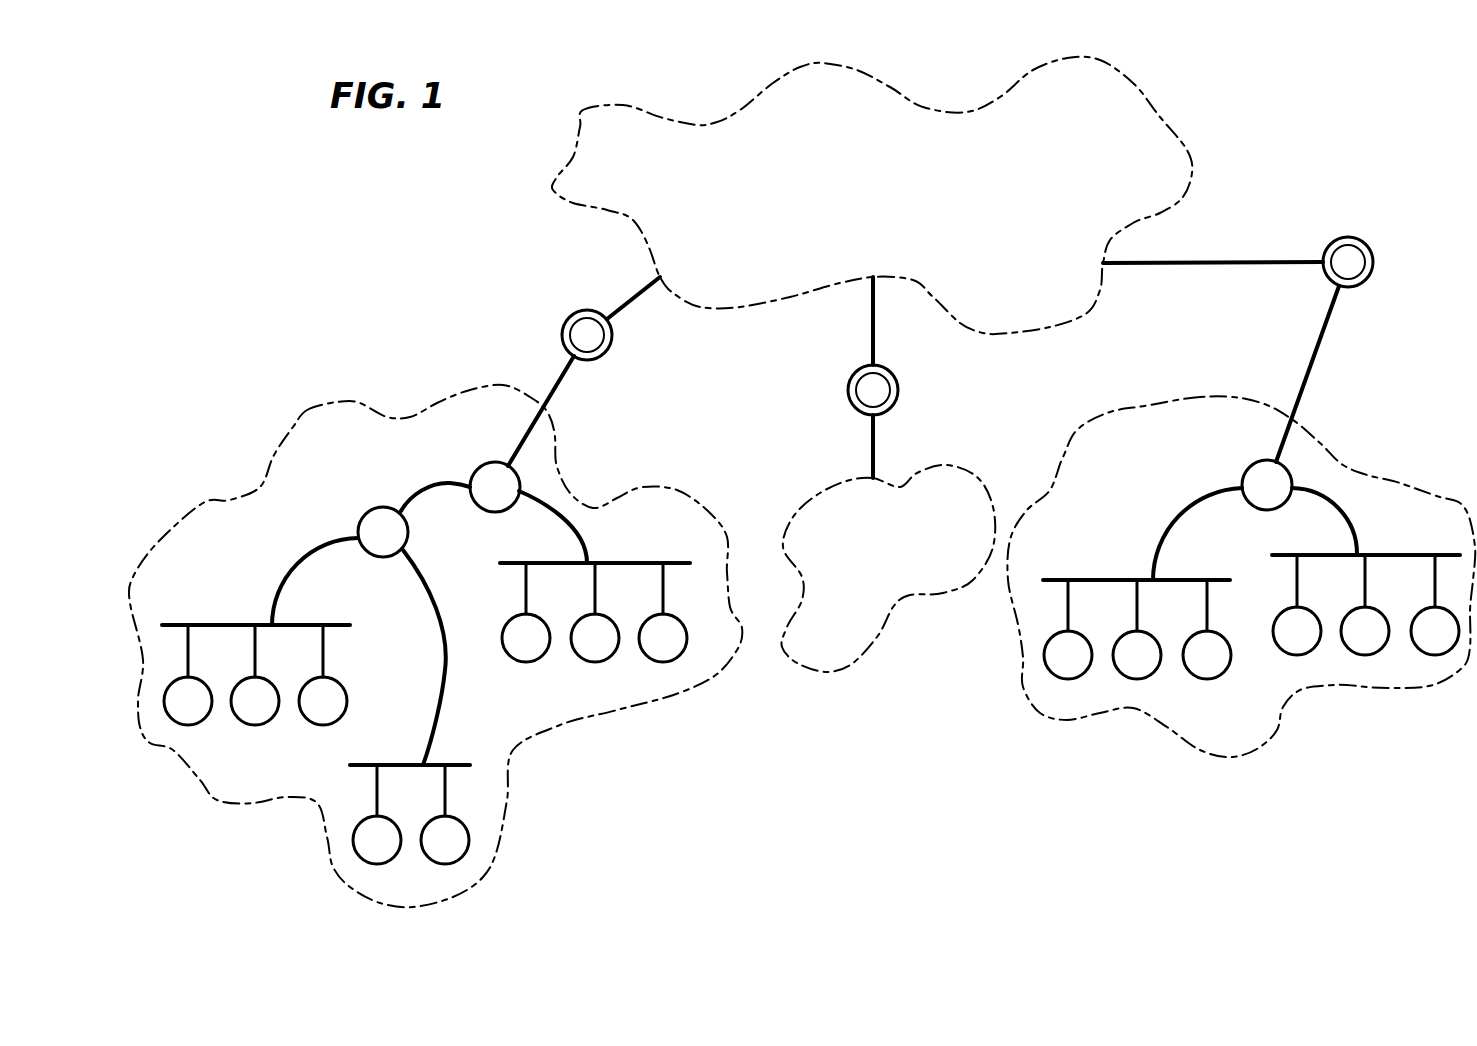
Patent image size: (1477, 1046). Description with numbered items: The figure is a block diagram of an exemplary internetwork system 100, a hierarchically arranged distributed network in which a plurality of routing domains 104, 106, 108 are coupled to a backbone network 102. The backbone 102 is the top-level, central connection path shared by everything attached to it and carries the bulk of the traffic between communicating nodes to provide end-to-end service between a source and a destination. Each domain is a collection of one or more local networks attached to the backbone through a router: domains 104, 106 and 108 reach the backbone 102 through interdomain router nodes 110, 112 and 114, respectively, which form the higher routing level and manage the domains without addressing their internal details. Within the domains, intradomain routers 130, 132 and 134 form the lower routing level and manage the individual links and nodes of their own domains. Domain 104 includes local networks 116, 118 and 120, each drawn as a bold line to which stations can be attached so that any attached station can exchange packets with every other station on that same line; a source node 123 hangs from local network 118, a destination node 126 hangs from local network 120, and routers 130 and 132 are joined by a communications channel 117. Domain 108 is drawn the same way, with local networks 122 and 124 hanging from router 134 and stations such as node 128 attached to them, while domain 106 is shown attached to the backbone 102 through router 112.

The internetwork system 100 is at (1414, 180).
The backbone network 102 is at (920, 197).
The routing domain 104 is at (413, 455).
The routing domain 106 is at (933, 568).
The routing domain 108 is at (1208, 478).
The router node 110 is at (593, 310).
The router node 112 is at (848, 388).
The router node 114 is at (1351, 237).
The local network 116 is at (393, 762).
The communications channel 117 is at (443, 489).
The local network 118 is at (595, 617).
The local network 120 is at (256, 678).
The local area network 122 is at (1423, 553).
The source node 123 is at (527, 663).
The local area network 124 is at (1137, 634).
The destination node 126 is at (255, 726).
The node 128 is at (1207, 680).
The intradomain router 130 is at (500, 462).
The intradomain router 132 is at (382, 507).
The intradomain router 134 is at (1258, 462).